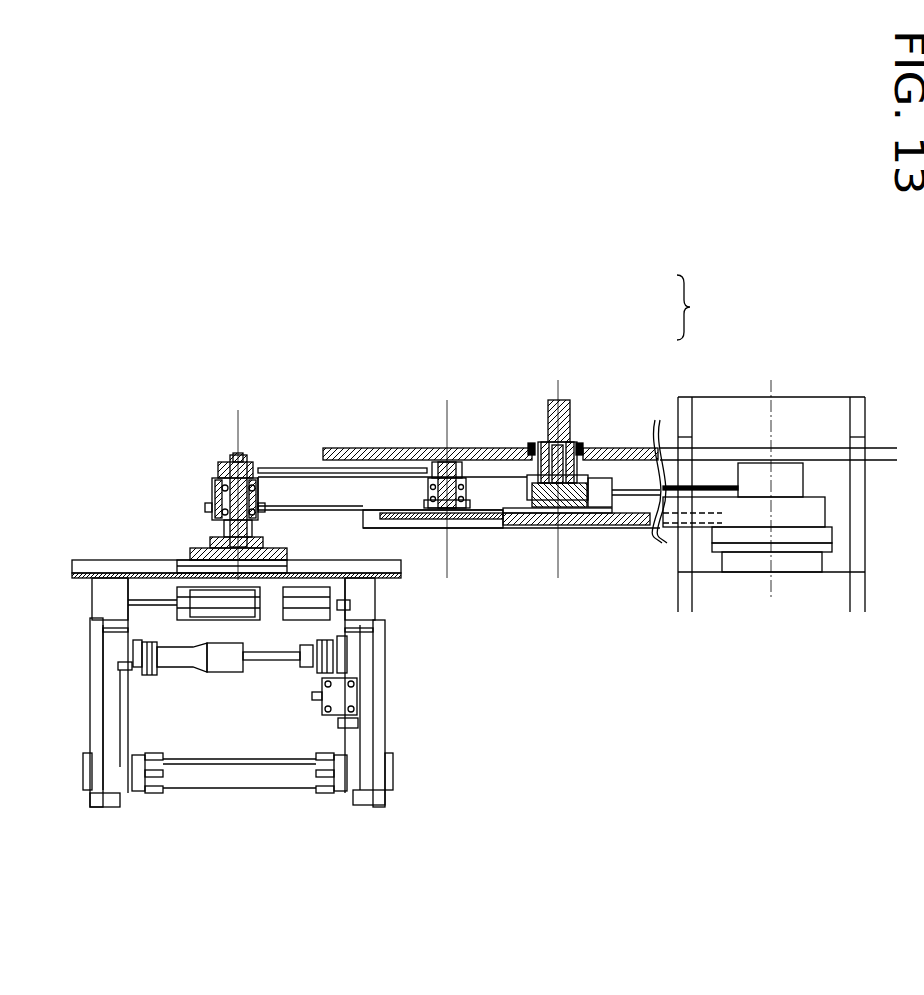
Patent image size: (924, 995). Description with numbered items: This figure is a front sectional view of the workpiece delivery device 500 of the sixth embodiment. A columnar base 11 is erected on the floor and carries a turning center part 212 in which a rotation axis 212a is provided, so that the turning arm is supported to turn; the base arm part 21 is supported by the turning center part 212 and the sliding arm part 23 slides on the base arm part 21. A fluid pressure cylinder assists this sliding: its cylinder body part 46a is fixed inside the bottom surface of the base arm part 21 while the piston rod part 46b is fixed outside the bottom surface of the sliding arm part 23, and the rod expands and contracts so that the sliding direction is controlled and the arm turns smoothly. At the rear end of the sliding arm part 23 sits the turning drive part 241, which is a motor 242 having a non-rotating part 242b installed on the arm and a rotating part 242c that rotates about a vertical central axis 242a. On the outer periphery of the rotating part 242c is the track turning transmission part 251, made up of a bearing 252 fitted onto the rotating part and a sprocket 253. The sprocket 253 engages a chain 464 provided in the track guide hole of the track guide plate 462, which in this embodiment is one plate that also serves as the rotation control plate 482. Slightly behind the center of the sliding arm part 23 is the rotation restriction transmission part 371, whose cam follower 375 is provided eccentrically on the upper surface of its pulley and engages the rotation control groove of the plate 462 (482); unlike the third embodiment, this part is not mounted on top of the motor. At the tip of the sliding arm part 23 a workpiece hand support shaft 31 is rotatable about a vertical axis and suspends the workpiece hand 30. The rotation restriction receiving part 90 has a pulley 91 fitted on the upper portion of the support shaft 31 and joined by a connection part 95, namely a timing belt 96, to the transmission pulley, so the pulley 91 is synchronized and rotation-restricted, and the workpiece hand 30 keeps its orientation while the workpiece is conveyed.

The workpiece hand 30 is at (137, 544).
The workpiece hand support shaft 31 is at (203, 502).
The rotation restriction receiving part 90 is at (196, 437).
The pulley 91 is at (217, 463).
The connection part 95 is at (322, 392).
The timing belt 96 is at (300, 470).
The sliding arm part 23 is at (325, 502).
The track guide plate 462 is at (490, 370).
The rotation control plate 482 is at (337, 452).
The rotation restriction transmission part 371 is at (435, 452).
The cam follower 375 is at (456, 450).
The turning drive part 241 is at (564, 394).
The motor 242 is at (540, 442).
The vertical central axis 242a is at (555, 545).
The non-rotating part 242b is at (593, 520).
The rotating part 242c is at (600, 472).
The chain 464 is at (528, 448).
The sprocket 253 is at (583, 444).
The bearing 252 is at (590, 478).
The track turning transmission part 251 is at (710, 307).
The cylinder body part 46a is at (572, 520).
The piston rod part 46b is at (463, 470).
The workpiece delivery device 500 is at (823, 376).
The turning center part 212 is at (806, 457).
The columnar base 11 is at (857, 503).
The base arm part 21 is at (720, 523).
The rotation axis 212a is at (771, 597).